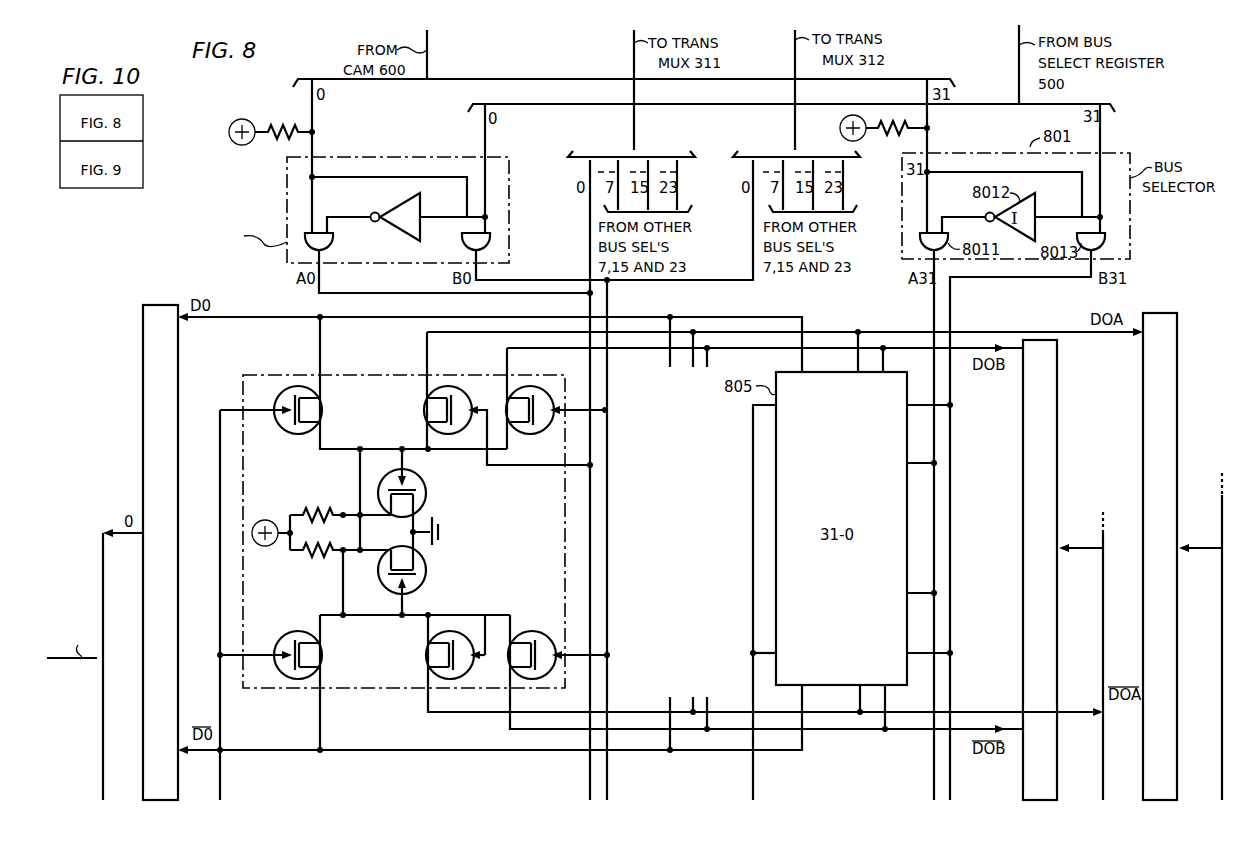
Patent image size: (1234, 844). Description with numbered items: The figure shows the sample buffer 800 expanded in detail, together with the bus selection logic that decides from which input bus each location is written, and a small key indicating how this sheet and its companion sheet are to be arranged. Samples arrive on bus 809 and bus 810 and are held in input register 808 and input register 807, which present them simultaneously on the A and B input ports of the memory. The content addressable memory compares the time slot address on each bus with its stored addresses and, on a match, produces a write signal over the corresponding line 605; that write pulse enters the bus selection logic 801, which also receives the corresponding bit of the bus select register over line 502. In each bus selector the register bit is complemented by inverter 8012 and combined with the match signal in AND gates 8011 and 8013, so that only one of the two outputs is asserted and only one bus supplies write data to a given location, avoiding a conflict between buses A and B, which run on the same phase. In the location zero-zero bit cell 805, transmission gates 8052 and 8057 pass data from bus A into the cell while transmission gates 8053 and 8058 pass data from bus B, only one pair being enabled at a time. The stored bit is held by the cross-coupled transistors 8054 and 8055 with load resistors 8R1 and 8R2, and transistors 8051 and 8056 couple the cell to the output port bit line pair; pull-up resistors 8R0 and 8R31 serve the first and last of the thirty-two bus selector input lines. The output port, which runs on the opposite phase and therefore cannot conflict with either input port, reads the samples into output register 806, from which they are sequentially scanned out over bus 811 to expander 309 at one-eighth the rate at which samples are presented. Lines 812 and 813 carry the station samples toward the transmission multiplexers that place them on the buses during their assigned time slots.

The match signal lines 605 is at (427, 53).
The line to transmission multiplexer 311 812 is at (634, 54).
The line to transmission multiplexer 312 813 is at (795, 54).
The line from bus select register 500 502 is at (1019, 54).
The pull-up resistor 8R0 is at (270, 127).
The pull-up resistor 8R31 is at (883, 135).
The bus selection logic 801 is at (422, 158).
The AND gate 8011 is at (333, 243).
The inverter 8012 is at (396, 204).
The AND gate 8013 is at (465, 244).
The output register 806 is at (143, 360).
The bit cell 805 is at (302, 375).
The transistor 8051 is at (325, 406).
The transmission gate 8052 is at (424, 412).
The transmission gate 8053 is at (548, 430).
The transistor 8054 is at (431, 490).
The transistor 8055 is at (431, 579).
The transistor 8056 is at (288, 634).
The transmission gate 8057 is at (425, 659).
The transmission gate 8058 is at (553, 634).
The load resistor 8R1 is at (340, 506).
The load resistor 8R2 is at (340, 563).
The sample buffer 800 is at (697, 561).
The input register B 807 is at (1057, 392).
The input register A 808 is at (1180, 344).
The bus 809 is at (1221, 507).
The bus 810 is at (1103, 610).
The bus 811 is at (70, 658).
The expander 309 is at (74, 624).